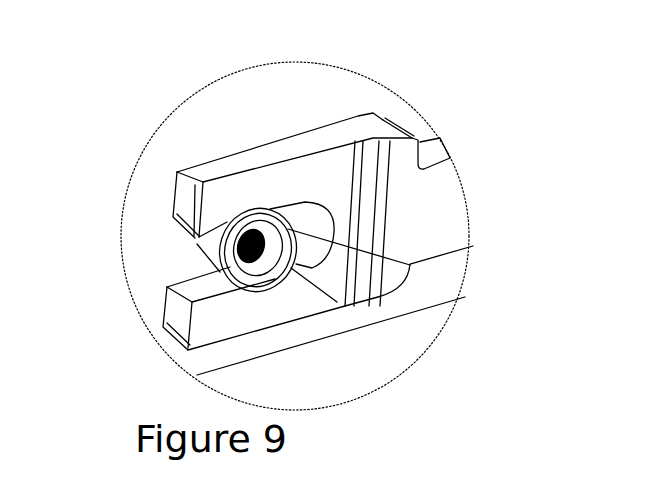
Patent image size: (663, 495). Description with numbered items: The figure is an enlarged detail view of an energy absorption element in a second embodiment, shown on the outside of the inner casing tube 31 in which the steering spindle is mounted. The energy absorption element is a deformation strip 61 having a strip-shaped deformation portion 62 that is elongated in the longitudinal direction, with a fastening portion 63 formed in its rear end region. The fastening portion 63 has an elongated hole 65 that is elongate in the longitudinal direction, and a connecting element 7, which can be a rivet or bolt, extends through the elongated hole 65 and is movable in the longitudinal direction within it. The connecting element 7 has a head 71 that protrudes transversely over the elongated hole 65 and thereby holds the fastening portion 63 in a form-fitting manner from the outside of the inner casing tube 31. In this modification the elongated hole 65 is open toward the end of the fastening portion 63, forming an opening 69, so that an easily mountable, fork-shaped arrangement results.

The connecting element 7 is at (265, 262).
The inner casing tube 31 is at (327, 93).
The deformation strip 61 is at (384, 120).
The deformation portion 62 is at (457, 187).
The fastening portion 63 is at (297, 182).
The elongated hole 65 is at (410, 264).
The opening 69 is at (164, 258).
The head 71 is at (293, 257).